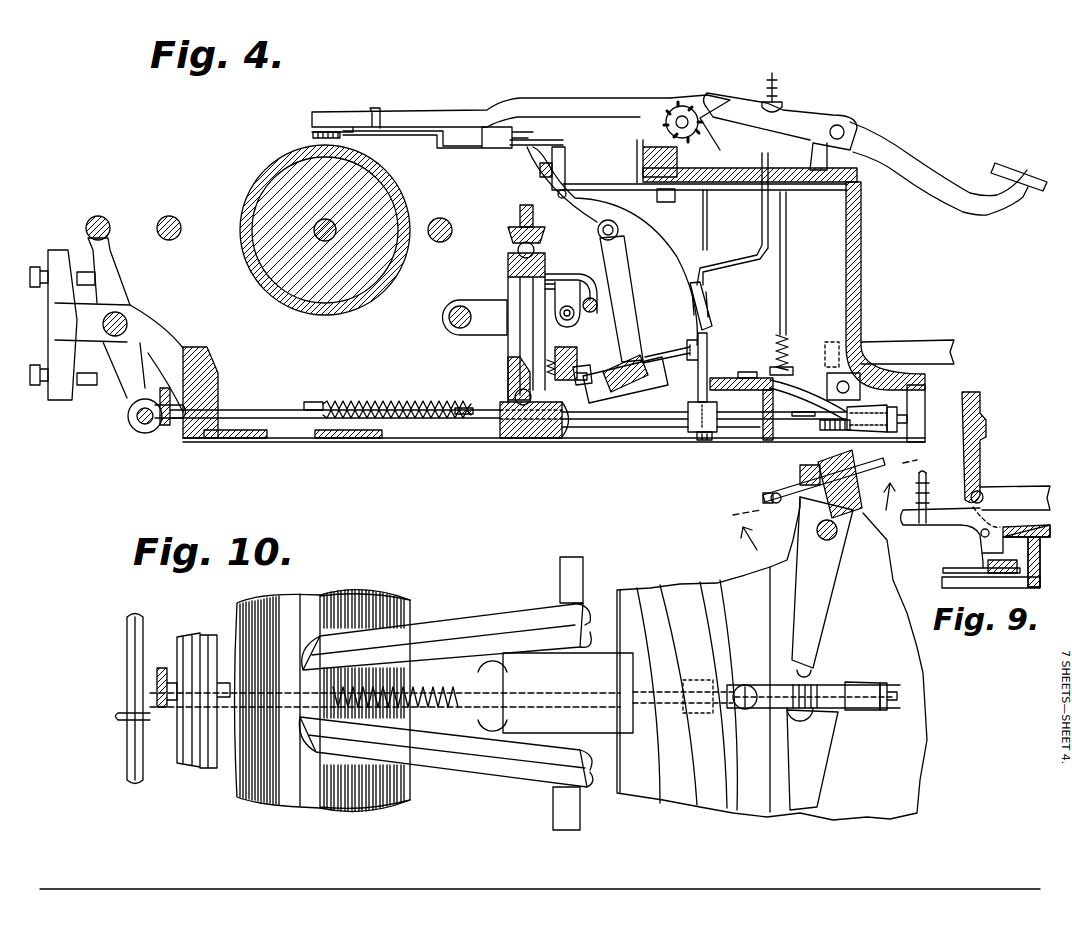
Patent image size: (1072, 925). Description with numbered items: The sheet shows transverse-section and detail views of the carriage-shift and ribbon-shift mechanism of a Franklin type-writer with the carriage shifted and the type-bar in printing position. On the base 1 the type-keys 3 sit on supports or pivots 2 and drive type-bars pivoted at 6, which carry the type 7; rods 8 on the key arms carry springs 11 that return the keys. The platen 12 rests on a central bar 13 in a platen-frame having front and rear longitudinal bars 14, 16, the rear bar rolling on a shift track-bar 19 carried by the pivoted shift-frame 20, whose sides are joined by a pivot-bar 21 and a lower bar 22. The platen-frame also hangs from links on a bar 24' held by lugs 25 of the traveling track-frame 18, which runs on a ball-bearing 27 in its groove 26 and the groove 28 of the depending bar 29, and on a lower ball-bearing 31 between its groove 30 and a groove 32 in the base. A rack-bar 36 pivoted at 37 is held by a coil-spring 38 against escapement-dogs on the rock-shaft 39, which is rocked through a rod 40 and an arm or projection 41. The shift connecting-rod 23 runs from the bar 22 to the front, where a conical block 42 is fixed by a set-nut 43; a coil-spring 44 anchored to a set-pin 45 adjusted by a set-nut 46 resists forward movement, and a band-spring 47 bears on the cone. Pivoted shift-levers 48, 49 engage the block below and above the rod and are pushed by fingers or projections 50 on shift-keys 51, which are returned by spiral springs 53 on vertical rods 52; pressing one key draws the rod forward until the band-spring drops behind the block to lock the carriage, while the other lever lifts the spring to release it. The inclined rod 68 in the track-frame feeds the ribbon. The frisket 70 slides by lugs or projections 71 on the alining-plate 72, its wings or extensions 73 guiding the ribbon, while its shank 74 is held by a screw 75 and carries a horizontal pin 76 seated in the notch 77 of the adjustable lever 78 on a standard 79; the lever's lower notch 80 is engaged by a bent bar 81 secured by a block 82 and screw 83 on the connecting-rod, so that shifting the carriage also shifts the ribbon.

In FIG. 4, the base 1 is at (858, 285).
In FIG. 10, the base 1 is at (772, 658).
In FIG. 9, the base 1 is at (980, 402).
In FIG. 4, the supports or pivots 2 is at (842, 127).
In FIG. 4, the type-keys 3 is at (915, 175).
In FIG. 4, the type-bar pivot 6 is at (683, 106).
In FIG. 4, the type 7 is at (340, 112).
In FIG. 4, the rods 8 is at (775, 76).
In FIG. 4, the springs 11 is at (776, 97).
In FIG. 4, the platen 12 is at (335, 290).
In FIG. 10, the platen 12 is at (300, 610).
In FIG. 4, the central bar 13 is at (318, 240).
In FIG. 4, the front longitudinal bar 14 is at (441, 218).
In FIG. 4, the rear longitudinal bar 16 is at (172, 212).
In FIG. 4, the track-frame 18 is at (512, 343).
In FIG. 4, the shift track-bar 19 is at (100, 212).
In FIG. 4, the shift-frame 20 is at (112, 275).
In FIG. 4, the pivot-bar 21 is at (128, 320).
In FIG. 4, the bar 22 is at (133, 422).
In FIG. 10, the bar 22 is at (128, 745).
In FIG. 4, the shift connecting-rod 23 is at (290, 422).
In FIG. 10, the shift connecting-rod 23 is at (118, 716).
In FIG. 4, the bar 24' is at (437, 320).
In FIG. 4, the lugs 25 is at (480, 322).
In FIG. 4, the groove 26 is at (510, 257).
In FIG. 4, the ball-bearing 27 is at (518, 248).
In FIG. 4, the groove 28 is at (514, 234).
In FIG. 4, the depending bar 29 is at (520, 208).
In FIG. 4, the groove 30 is at (508, 380).
In FIG. 4, the ball-bearing 31 is at (515, 397).
In FIG. 4, the groove 32 is at (512, 440).
In FIG. 4, the rack-bar 36 is at (565, 440).
In FIG. 4, the pivot 37 is at (560, 300).
In FIG. 4, the coil-spring 38 is at (556, 382).
In FIG. 4, the rock-shaft 39 is at (632, 362).
In FIG. 4, the rod 40 is at (760, 216).
In FIG. 4, the arm or projection 41 is at (662, 388).
In FIG. 4, the conical block 42 is at (866, 417).
In FIG. 10, the conical block 42 is at (862, 686).
In FIG. 4, the set-nut 43 is at (895, 407).
In FIG. 10, the set-nut 43 is at (890, 684).
In FIG. 4, the coil-spring 44 is at (345, 400).
In FIG. 10, the set-pin 45 is at (215, 650).
In FIG. 4, the set-nut 46 is at (165, 428).
In FIG. 10, the set-nut 46 is at (162, 668).
In FIG. 4, the band-spring 47 is at (795, 380).
In FIG. 10, the band-spring 47 is at (808, 685).
In FIG. 4, the shift-lever 48 is at (790, 418).
In FIG. 10, the shift-lever 48 is at (808, 628).
In FIG. 9, the shift-lever 48 is at (955, 568).
In FIG. 4, the shift-lever 49 is at (825, 430).
In FIG. 10, the shift-lever 49 is at (820, 770).
In FIG. 4, the fingers or projections 50 is at (800, 411).
In FIG. 4, the shift-keys 51 is at (875, 348).
In FIG. 10, the shift-keys 51 is at (845, 478).
In FIG. 9, the shift-keys 51 is at (1005, 497).
In FIG. 4, the vertical rods 52 is at (787, 310).
In FIG. 10, the vertical rods 52 is at (763, 497).
In FIG. 9, the vertical rods 52 is at (924, 474).
In FIG. 4, the spiral springs 53 is at (788, 335).
In FIG. 9, the spiral springs 53 is at (927, 494).
In FIG. 4, the inclined rod 68 is at (575, 320).
In FIG. 10, the frisket 70 is at (422, 627).
In FIG. 10, the lugs or projections 71 is at (497, 722).
In FIG. 10, the alining-plate 72 is at (570, 660).
In FIG. 10, the wings or extensions 73 is at (500, 620).
In FIG. 4, the shank 74 is at (565, 160).
In FIG. 4, the screw 75 is at (666, 203).
In FIG. 4, the horizontal pin 76 is at (540, 170).
In FIG. 4, the notch 77 is at (558, 193).
In FIG. 4, the adjustable lever 78 is at (660, 273).
In FIG. 4, the standard 79 is at (605, 262).
In FIG. 4, the notch 80 is at (712, 312).
In FIG. 4, the bent bar 81 is at (708, 370).
In FIG. 4, the block 82 is at (702, 416).
In FIG. 4, the screw 83 is at (704, 442).